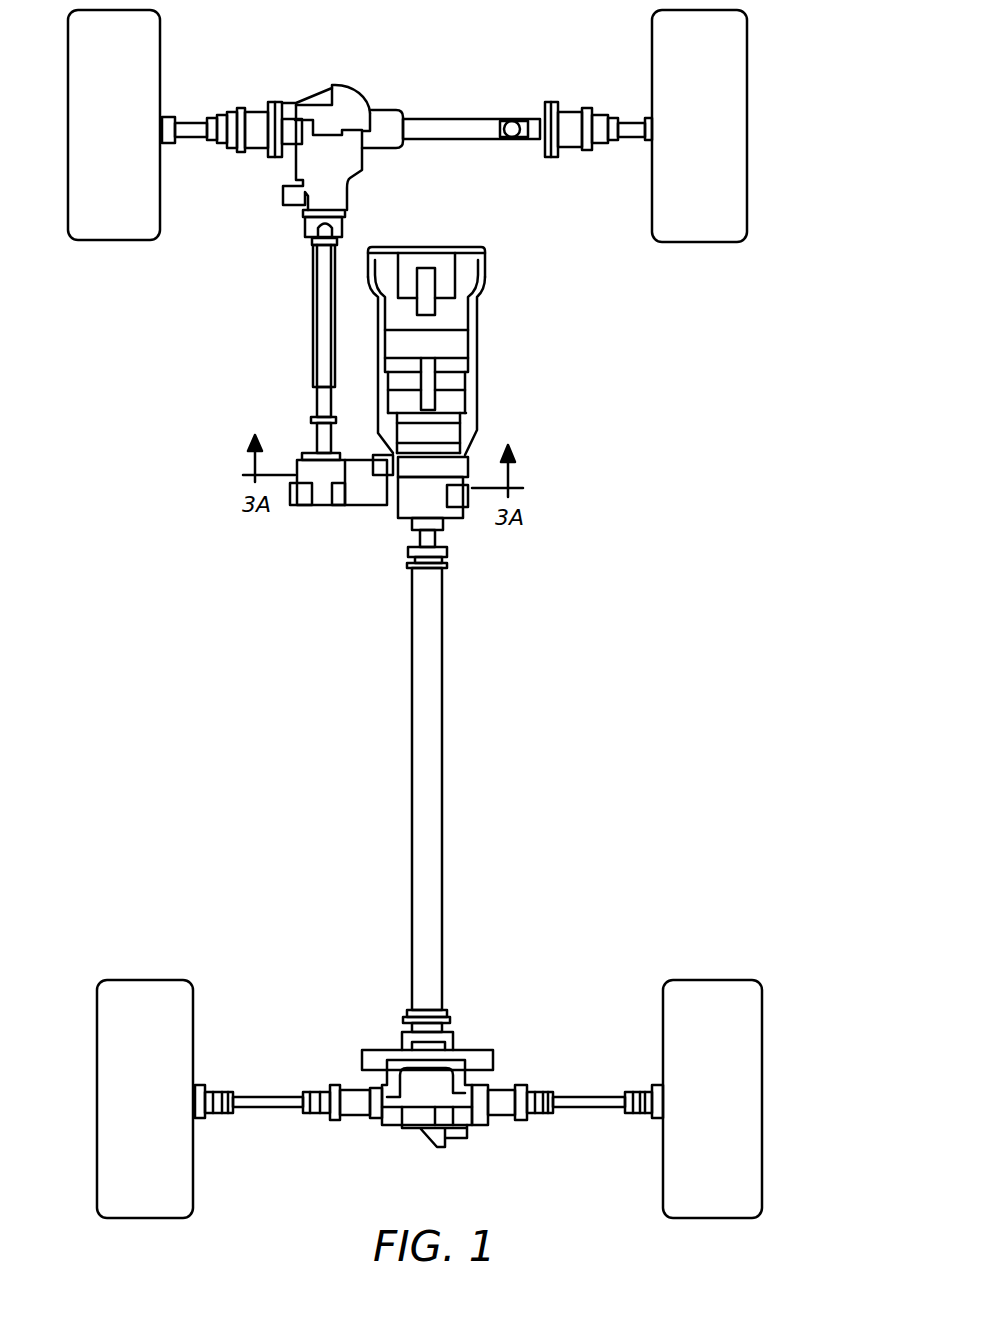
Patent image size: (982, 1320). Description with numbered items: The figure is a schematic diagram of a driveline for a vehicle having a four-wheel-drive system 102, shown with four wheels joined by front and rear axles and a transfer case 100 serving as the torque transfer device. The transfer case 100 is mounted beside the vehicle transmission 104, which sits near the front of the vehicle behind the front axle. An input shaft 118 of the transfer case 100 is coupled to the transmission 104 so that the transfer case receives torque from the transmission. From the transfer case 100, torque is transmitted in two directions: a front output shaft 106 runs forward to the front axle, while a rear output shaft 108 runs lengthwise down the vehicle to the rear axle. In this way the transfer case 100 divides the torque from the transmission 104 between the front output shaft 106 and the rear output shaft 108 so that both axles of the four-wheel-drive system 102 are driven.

The transfer case 100 is at (336, 511).
The four-wheel-drive system 102 is at (810, 133).
The vehicle transmission 104 is at (477, 343).
The front output shaft 106 is at (313, 305).
The rear output shaft 108 is at (442, 761).
The input shaft 118 is at (463, 455).